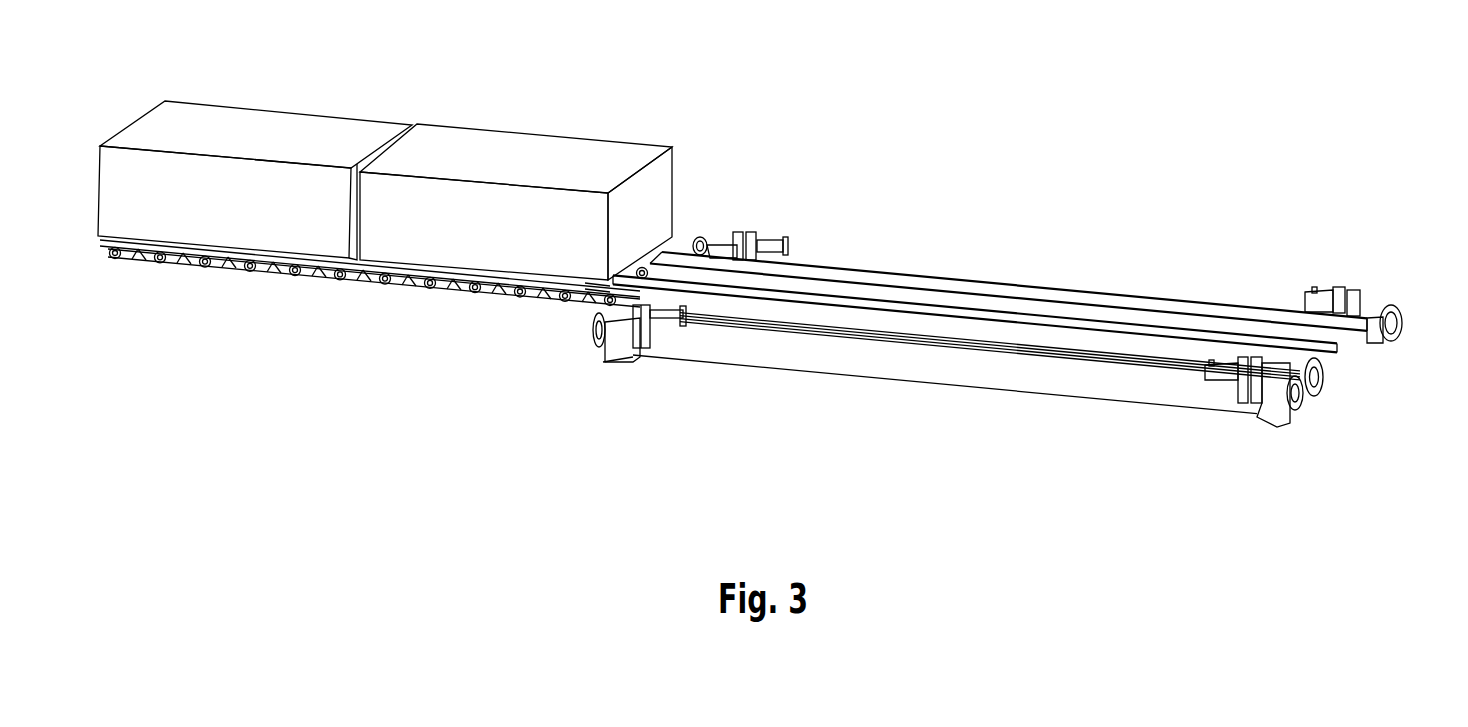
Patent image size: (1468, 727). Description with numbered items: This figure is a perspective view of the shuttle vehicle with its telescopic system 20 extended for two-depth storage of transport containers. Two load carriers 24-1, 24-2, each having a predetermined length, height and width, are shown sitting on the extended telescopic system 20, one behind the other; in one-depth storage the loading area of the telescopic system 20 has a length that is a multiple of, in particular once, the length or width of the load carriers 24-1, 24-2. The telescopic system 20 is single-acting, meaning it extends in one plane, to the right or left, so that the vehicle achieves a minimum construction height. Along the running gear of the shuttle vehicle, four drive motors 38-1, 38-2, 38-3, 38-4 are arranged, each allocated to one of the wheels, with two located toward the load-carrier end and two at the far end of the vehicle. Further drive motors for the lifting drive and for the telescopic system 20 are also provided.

The telescopic system 20 is at (360, 283).
The load carrier 24-1 is at (300, 108).
The load carrier 24-2 is at (523, 130).
The drive motor 38-1 is at (640, 357).
The drive motor 38-2 is at (757, 235).
The drive motor 38-3 is at (1297, 410).
The drive motor 38-4 is at (1372, 312).